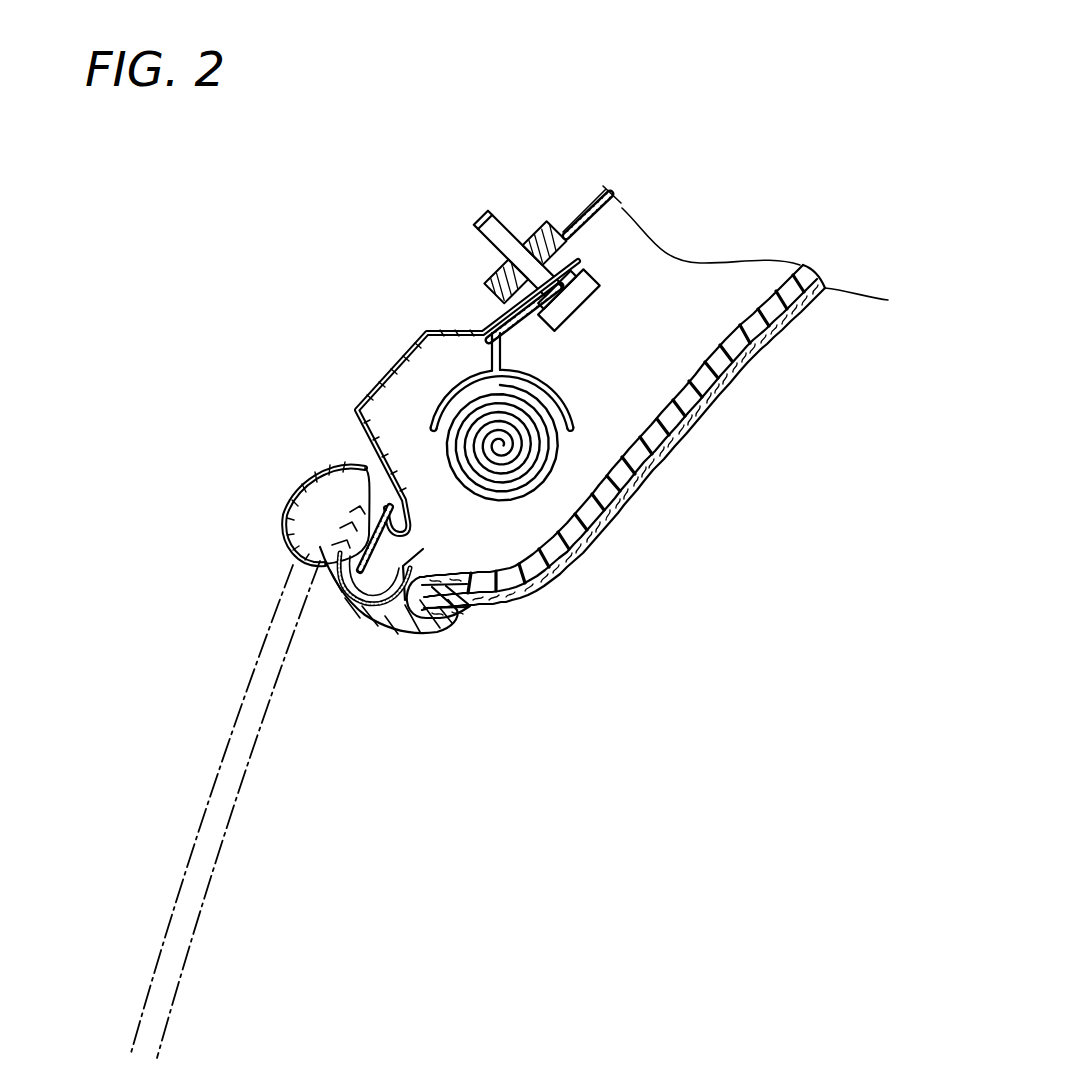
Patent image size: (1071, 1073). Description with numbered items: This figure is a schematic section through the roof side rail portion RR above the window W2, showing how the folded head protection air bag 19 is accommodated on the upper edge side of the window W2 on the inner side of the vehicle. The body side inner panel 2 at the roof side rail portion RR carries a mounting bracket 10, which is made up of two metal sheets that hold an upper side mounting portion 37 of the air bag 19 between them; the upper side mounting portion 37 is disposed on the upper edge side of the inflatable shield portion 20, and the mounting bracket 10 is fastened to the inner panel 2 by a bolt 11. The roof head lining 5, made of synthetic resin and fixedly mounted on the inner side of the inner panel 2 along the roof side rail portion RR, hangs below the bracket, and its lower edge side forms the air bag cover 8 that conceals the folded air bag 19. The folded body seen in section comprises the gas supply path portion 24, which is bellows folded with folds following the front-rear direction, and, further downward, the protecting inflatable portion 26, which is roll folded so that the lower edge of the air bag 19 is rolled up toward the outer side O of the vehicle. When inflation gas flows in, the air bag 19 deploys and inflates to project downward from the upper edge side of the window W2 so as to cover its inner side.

The inner panel 2 is at (393, 368).
The roof head lining 5 is at (690, 426).
The air bag cover 8 is at (447, 620).
The mounting bracket 10 is at (572, 238).
The bolt 11 is at (500, 227).
The air bag 19 is at (433, 595).
The inflatable shield portion 20 is at (488, 535).
The gas supply path portion 24 is at (575, 368).
The protecting inflatable portion 26 is at (547, 509).
The upper side mounting portion 37 is at (571, 231).
The roof side rail portion RR is at (807, 353).
The window W2 is at (212, 840).
The outer side O is at (108, 729).